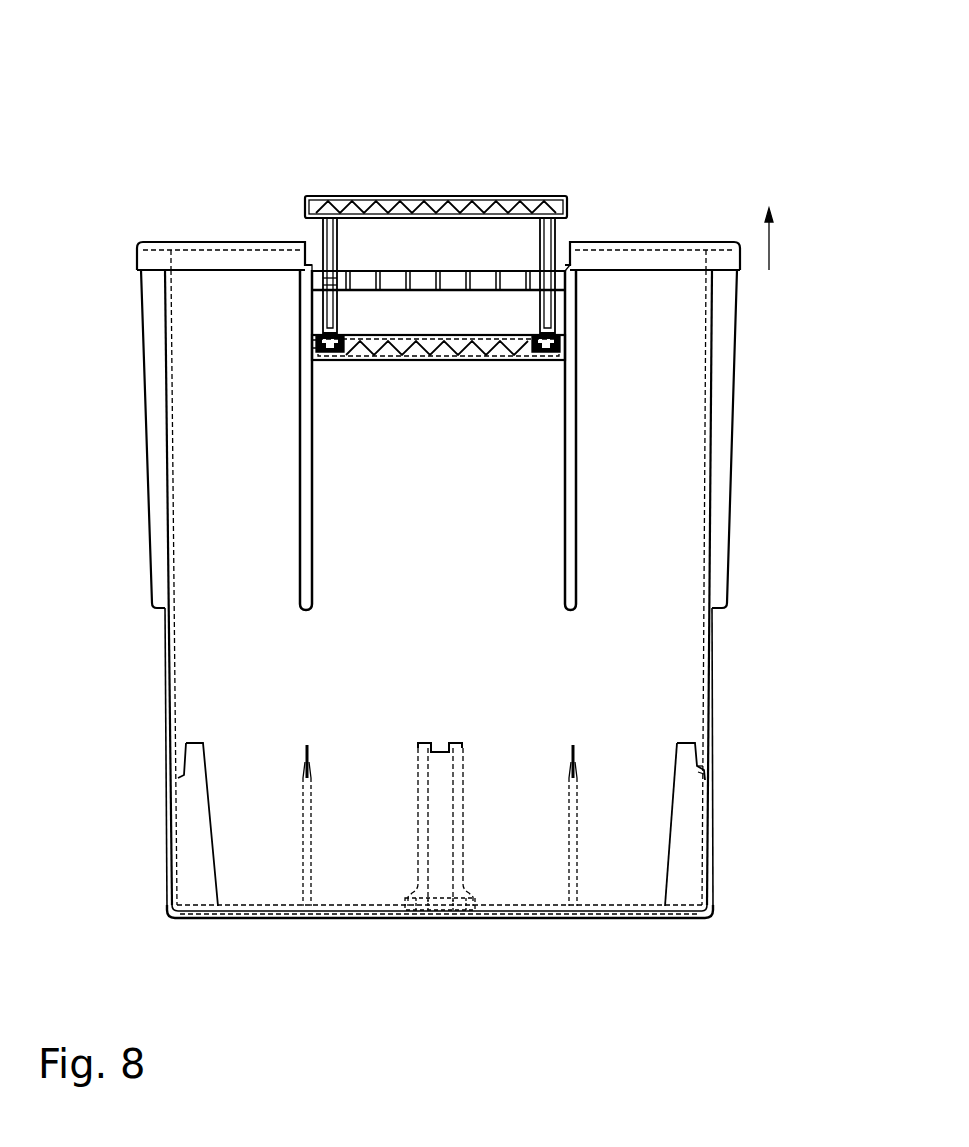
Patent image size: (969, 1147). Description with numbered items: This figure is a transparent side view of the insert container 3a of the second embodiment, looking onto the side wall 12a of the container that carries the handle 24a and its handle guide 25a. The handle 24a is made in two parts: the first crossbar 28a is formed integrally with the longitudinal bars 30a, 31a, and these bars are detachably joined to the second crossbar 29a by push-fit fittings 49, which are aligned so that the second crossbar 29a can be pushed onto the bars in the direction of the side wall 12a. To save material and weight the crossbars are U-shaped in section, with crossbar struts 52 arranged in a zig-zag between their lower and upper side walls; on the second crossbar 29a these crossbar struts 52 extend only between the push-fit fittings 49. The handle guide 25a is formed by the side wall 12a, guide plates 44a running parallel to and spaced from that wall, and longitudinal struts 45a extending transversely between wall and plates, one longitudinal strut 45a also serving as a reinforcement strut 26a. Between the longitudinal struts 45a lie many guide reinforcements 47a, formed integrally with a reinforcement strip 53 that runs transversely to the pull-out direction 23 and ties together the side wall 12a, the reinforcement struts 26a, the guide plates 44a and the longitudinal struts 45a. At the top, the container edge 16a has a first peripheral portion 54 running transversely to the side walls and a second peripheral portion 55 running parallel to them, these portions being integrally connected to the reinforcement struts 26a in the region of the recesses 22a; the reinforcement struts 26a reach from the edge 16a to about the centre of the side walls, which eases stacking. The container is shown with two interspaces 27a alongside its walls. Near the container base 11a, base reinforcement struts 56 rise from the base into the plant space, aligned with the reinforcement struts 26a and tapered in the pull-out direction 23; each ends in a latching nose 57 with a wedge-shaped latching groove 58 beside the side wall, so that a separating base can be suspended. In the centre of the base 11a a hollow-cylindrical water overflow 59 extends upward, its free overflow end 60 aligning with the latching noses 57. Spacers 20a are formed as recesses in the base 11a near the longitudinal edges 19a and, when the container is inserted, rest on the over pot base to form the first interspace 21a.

The insert container 3a is at (752, 97).
The longitudinal bar 30a is at (318, 232).
The crossbar struts 52 is at (328, 201).
The first crossbar 28a is at (363, 196).
The guide reinforcements 47a is at (409, 272).
The handle 24a is at (478, 193).
The reinforcement strip 53 is at (540, 218).
The recesses 22a is at (562, 257).
The first peripheral portion 54 is at (650, 242).
The second peripheral portion 55 is at (683, 251).
The container edge 16a is at (708, 237).
The pull-out direction 23 is at (805, 239).
The guide plates 44a is at (320, 280).
The longitudinal struts 45a is at (320, 290).
The handle guide 25a is at (580, 277).
The longitudinal bar 31a is at (560, 301).
The side wall of the container 12a is at (678, 335).
The push-fit fittings 49 is at (313, 344).
The second crossbar 29a is at (490, 362).
The reinforcement struts 26a is at (303, 432).
The left slot 27a is at (330, 477).
The free overflow end 60 is at (462, 745).
The latching groove 58 is at (700, 766).
The latching nose 57 is at (696, 772).
The longitudinal edges 19a is at (707, 853).
The spacers 20a is at (250, 913).
The container base 11a is at (247, 910).
The base reinforcement struts 56 is at (316, 852).
The first interspace 21a is at (386, 917).
The water overflow 59 is at (467, 850).